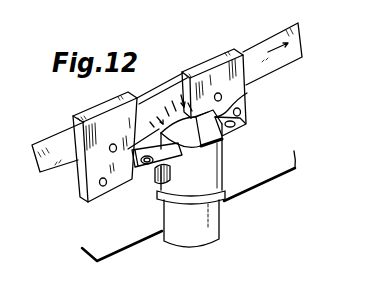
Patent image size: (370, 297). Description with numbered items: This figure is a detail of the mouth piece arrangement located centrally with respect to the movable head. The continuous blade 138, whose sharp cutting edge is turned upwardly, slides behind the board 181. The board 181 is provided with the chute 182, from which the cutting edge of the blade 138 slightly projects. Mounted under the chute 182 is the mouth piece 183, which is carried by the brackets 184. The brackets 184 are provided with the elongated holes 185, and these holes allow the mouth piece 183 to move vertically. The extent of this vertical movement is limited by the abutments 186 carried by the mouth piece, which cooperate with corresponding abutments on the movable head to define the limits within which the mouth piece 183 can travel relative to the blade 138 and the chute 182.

The continuous blade 138 is at (57, 143).
The board 181 is at (109, 124).
The chute 182 is at (173, 93).
The mouth piece 183 is at (222, 161).
The brackets 184 is at (248, 86).
The elongated holes 185 is at (153, 175).
The abutments 186 is at (238, 131).